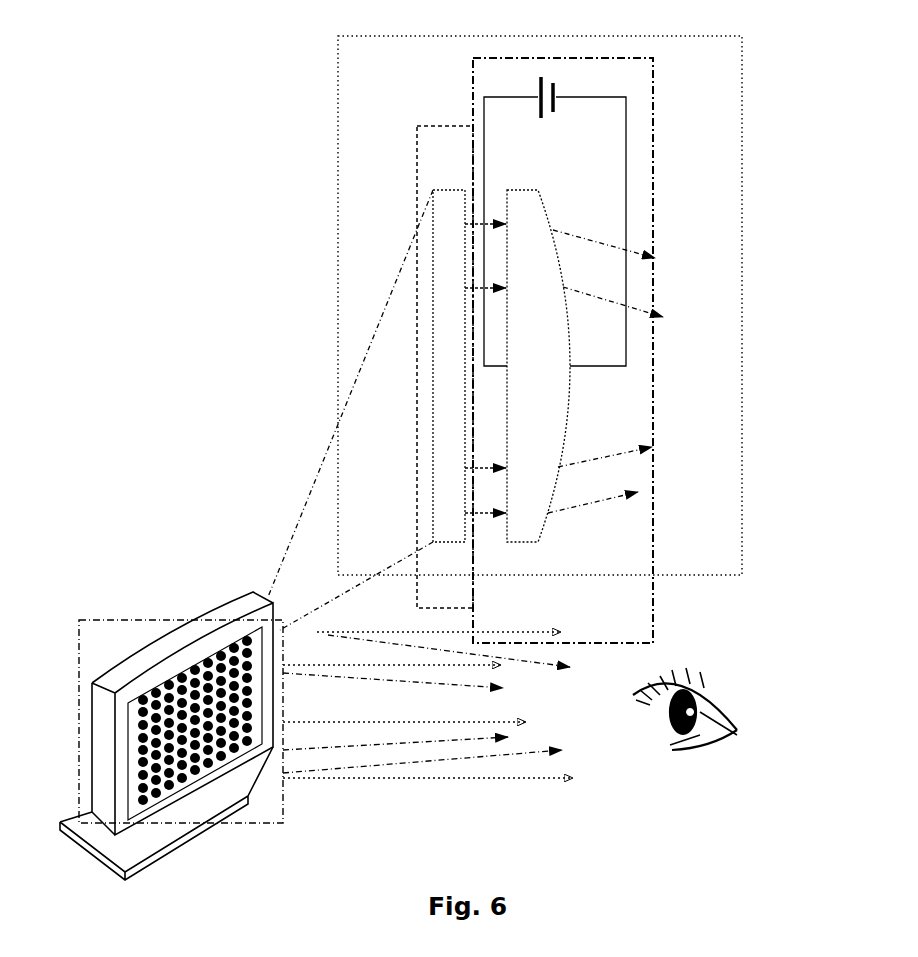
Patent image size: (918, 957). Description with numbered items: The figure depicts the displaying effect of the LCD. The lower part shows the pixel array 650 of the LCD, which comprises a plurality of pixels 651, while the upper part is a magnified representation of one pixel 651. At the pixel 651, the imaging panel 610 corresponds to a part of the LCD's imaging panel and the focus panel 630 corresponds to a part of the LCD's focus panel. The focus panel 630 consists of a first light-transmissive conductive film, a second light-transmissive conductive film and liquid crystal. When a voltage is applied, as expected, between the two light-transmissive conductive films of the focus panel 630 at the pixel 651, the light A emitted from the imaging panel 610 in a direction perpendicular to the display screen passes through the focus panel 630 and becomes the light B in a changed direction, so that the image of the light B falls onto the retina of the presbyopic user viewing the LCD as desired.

The imaging panel 610 is at (408, 158).
The focus panel 630 is at (665, 133).
The pixel array 650 is at (102, 622).
The pixel 651 is at (338, 305).
The light A is at (505, 224).
The light B is at (630, 250).